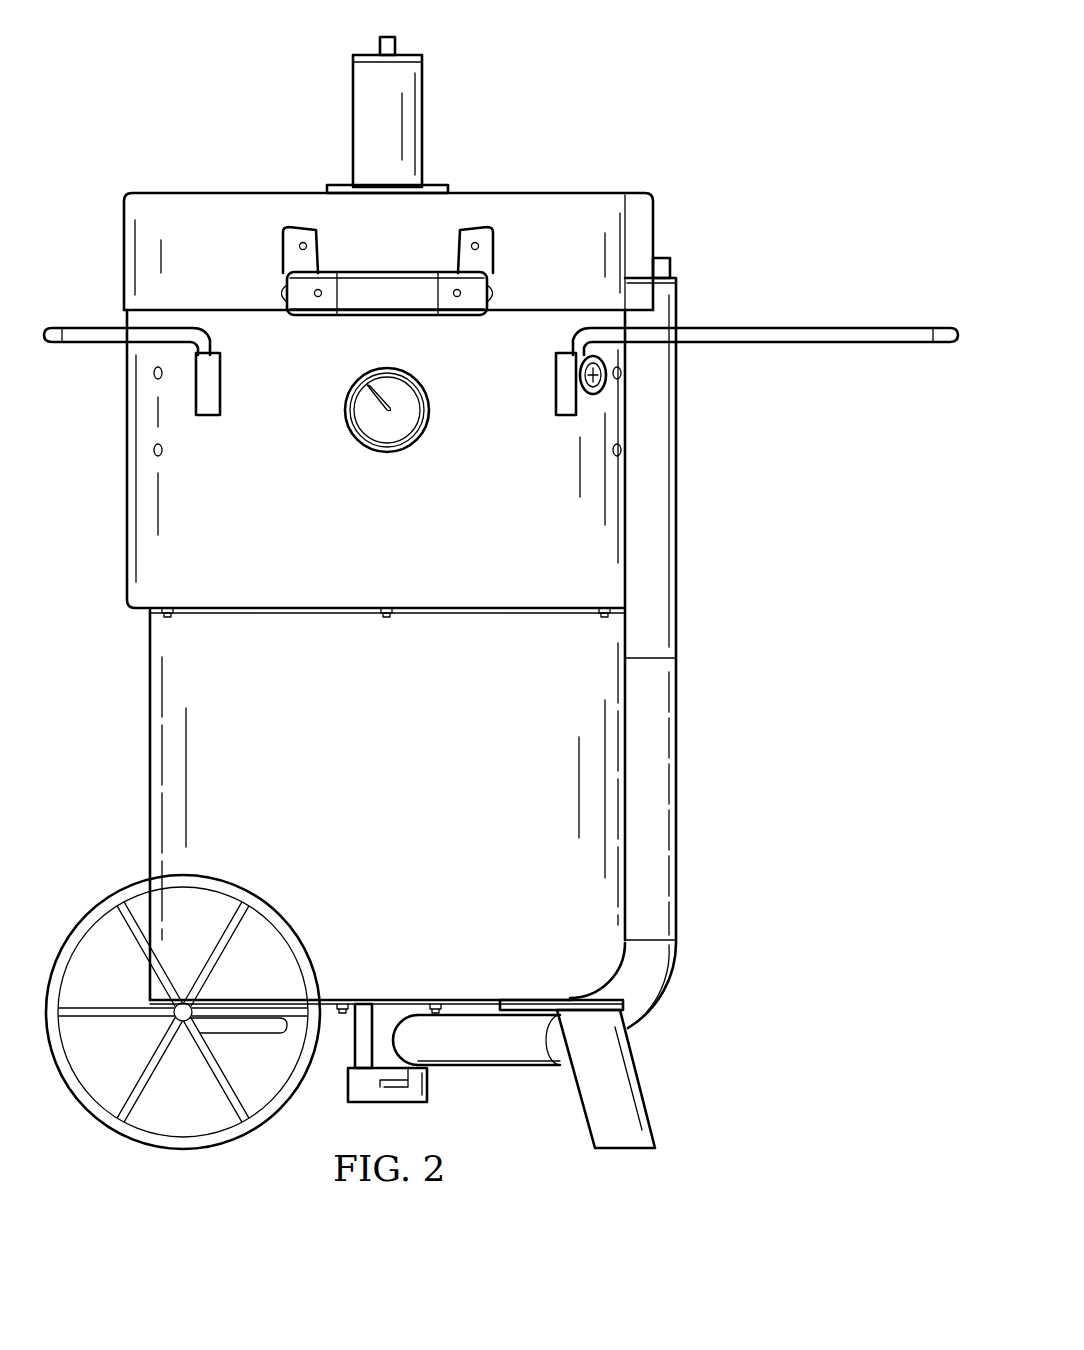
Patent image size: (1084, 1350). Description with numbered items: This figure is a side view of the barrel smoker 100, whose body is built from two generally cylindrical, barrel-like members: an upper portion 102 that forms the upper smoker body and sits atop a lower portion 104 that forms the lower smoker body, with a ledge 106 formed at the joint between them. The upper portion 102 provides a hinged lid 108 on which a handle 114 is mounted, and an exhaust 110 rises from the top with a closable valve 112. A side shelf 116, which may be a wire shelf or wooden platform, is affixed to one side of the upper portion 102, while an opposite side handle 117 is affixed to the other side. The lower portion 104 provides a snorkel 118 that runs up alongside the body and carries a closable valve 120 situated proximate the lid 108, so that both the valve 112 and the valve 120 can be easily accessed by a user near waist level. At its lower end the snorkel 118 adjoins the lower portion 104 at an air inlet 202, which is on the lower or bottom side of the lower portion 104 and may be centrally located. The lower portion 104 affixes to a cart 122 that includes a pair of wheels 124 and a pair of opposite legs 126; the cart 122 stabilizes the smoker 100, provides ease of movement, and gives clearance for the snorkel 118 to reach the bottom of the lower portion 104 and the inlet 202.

The barrel smoker 100 is at (614, 96).
The upper portion 102 is at (126, 470).
The lower portion 104 is at (150, 745).
The ledge 106 is at (278, 612).
The hinged lid 108 is at (229, 193).
The exhaust 110 is at (352, 120).
The closable valve 112 is at (368, 55).
The handle 114 is at (494, 256).
The side shelf 116 is at (812, 328).
The opposite side handle 117 is at (89, 328).
The snorkel 118 is at (677, 490).
The closable valve 120 is at (677, 279).
The cart 122 is at (134, 1172).
The wheels 124 is at (101, 903).
The legs 126 is at (640, 1084).
The air inlet 202 is at (366, 1012).